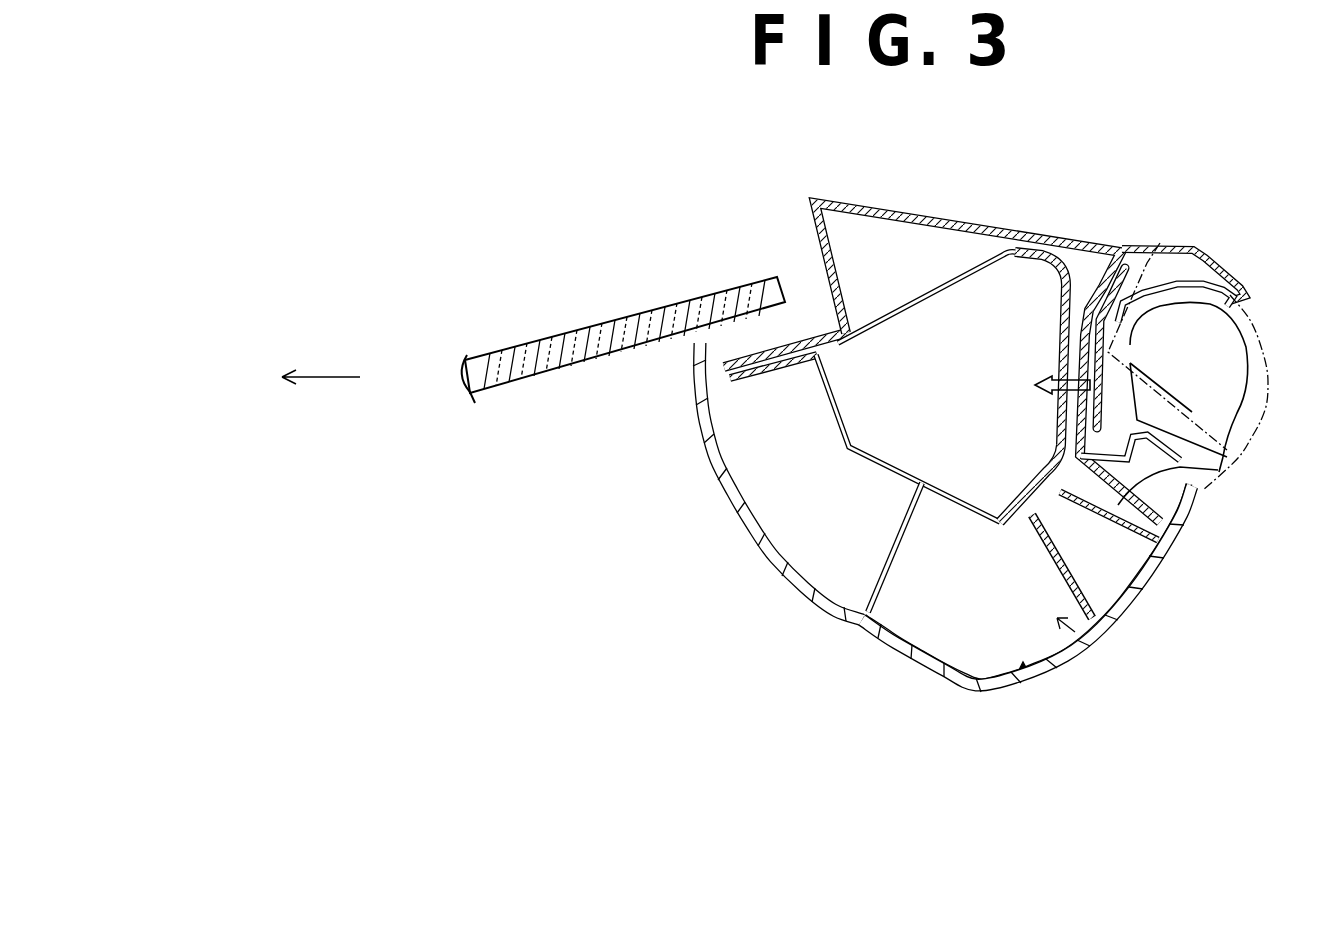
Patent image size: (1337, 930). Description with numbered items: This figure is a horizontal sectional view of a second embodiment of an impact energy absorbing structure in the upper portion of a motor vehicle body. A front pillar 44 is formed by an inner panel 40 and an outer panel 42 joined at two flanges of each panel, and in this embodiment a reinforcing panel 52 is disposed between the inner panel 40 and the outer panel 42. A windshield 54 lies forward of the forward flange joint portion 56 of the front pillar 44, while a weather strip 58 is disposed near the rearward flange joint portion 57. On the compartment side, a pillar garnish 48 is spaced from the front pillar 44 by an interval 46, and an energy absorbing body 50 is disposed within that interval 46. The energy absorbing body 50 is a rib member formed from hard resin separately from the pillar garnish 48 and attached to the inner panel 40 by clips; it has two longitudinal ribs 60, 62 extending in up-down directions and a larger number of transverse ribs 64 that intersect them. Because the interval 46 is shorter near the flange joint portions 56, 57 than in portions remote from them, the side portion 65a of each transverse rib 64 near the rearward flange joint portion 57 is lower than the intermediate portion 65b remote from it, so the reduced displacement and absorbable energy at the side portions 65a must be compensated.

The inner panel 40 is at (880, 468).
The outer panel 42 is at (1013, 228).
The front pillar 44 is at (1112, 240).
The interval 46 is at (808, 550).
The pillar garnish 48 is at (937, 658).
The energy absorbing body 50 is at (1030, 675).
The reinforcing panel 52 is at (917, 298).
The windshield 54 is at (696, 298).
The forward flange joint portion 56 is at (797, 337).
The rearward flange joint portion 57 is at (1172, 455).
The weather strip 58 is at (1160, 243).
The longitudinal rib 60 is at (900, 603).
The longitudinal rib 62 is at (1083, 580).
The transverse ribs 64 is at (1092, 620).
The side portion 65a is at (1130, 553).
The intermediate portion 65b is at (987, 637).